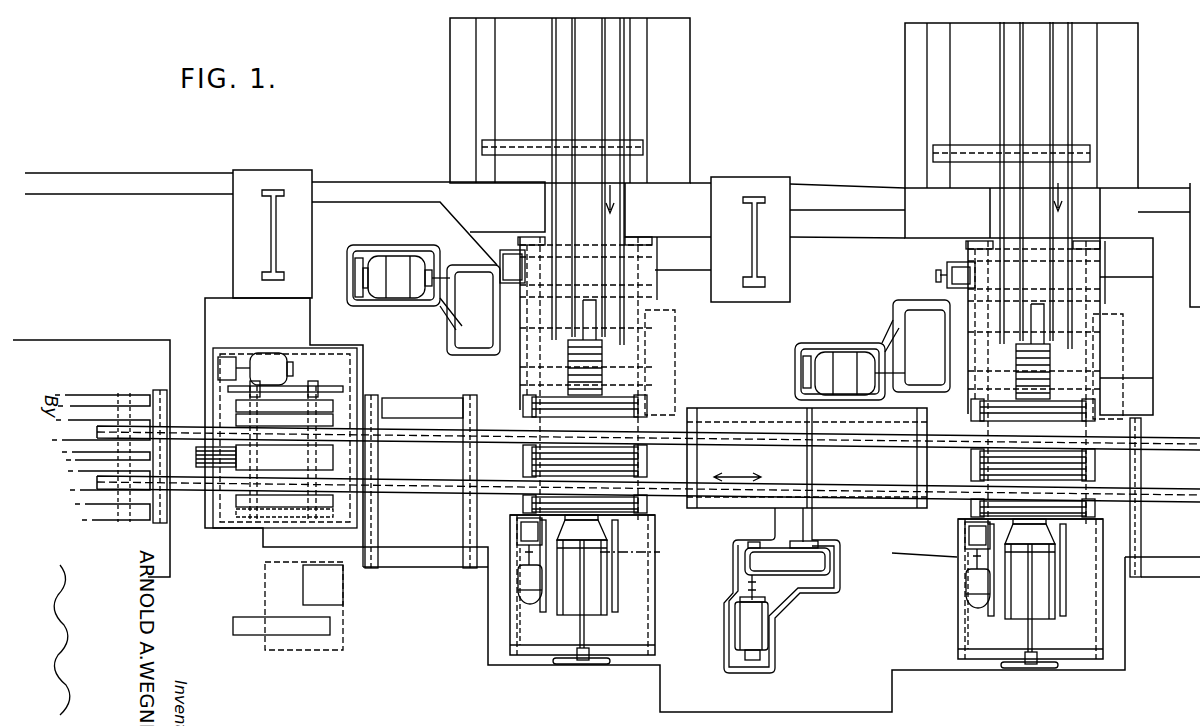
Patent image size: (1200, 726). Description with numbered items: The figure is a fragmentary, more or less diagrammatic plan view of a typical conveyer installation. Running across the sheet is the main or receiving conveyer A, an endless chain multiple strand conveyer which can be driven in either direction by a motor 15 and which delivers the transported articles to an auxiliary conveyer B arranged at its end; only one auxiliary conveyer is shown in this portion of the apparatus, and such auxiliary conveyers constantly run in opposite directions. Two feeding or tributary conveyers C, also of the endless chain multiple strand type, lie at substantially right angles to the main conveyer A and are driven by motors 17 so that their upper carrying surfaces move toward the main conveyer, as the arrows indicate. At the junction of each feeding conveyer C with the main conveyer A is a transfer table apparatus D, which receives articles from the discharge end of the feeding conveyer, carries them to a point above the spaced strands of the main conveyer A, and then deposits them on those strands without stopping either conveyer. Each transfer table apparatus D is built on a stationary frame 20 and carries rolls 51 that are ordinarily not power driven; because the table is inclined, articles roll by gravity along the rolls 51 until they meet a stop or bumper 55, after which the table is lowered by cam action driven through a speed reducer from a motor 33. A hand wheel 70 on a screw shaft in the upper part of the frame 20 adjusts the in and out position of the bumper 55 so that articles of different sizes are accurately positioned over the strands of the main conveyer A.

The feeding conveyer C is at (612, 100).
The motor 17 is at (398, 262).
The roll 51 is at (612, 470).
The transfer table apparatus D is at (512, 588).
The stop or abutment (bumper) 55 is at (612, 532).
The hand wheel 70 is at (587, 663).
The motor 33 is at (530, 593).
The stationary frame 20 is at (515, 675).
The motor 15 is at (748, 623).
The main or receiving conveyer A is at (405, 437).
The auxiliary conveyer B is at (91, 400).